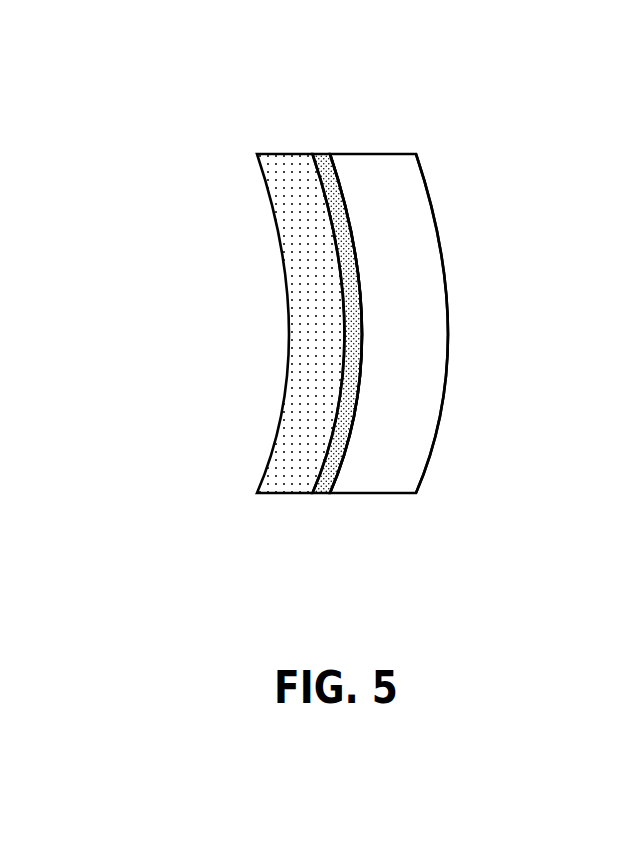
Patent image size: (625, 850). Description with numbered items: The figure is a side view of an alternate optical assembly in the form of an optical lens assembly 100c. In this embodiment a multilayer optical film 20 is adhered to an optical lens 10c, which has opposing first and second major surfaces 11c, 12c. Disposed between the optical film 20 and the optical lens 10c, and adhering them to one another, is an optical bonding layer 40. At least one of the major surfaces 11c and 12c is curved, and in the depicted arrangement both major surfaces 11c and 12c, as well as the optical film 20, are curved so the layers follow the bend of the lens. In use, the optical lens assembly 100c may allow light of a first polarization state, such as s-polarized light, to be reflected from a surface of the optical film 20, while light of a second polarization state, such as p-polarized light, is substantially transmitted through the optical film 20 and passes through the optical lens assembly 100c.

The optical lens assembly 100c is at (292, 291).
The optical lens 10c is at (363, 160).
The first major surface 11c is at (360, 272).
The second major surface 12c is at (445, 392).
The multilayer optical film 20 is at (283, 163).
The optical bonding layer 40 is at (323, 493).